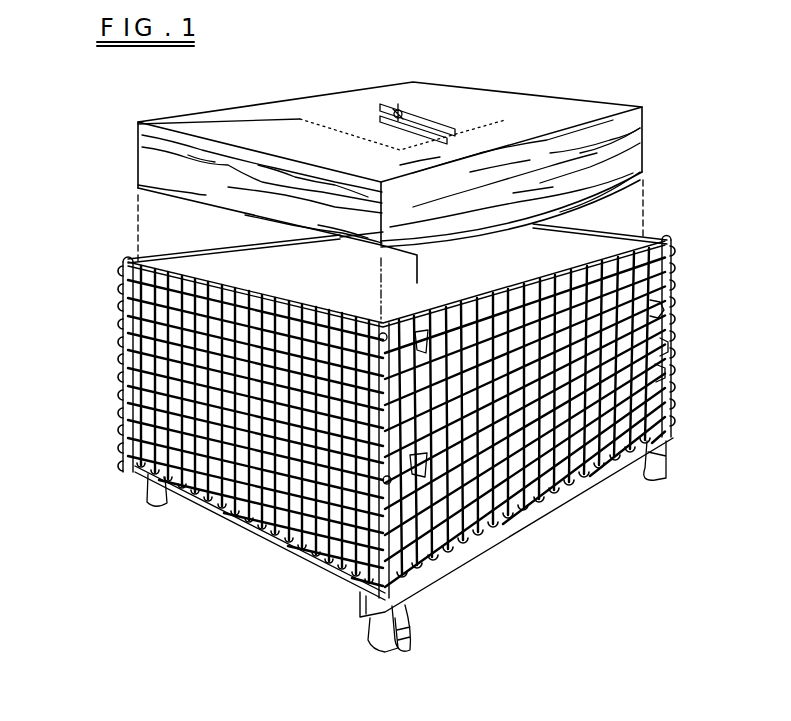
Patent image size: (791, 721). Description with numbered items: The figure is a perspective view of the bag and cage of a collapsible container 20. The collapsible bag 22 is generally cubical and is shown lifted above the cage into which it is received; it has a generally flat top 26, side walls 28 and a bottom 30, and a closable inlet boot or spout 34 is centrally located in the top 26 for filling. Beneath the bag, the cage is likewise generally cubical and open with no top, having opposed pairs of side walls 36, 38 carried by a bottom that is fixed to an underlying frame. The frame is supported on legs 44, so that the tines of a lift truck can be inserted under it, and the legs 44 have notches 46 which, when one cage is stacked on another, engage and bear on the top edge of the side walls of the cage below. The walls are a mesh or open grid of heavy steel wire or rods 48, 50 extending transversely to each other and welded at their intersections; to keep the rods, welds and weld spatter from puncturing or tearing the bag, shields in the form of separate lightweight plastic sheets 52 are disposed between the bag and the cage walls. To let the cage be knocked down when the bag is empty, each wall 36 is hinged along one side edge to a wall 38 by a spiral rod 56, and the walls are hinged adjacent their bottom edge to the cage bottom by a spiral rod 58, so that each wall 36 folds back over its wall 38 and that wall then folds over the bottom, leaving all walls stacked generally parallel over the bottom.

The collapsible container 20 is at (104, 230).
The collapsible bag 22 is at (153, 116).
The top 26 is at (300, 107).
The side walls 28 is at (160, 166).
The bottom 30 is at (448, 252).
The inlet boot or spout 34 is at (405, 117).
The side walls 36 is at (135, 332).
The side walls 38 is at (672, 266).
The legs 44 is at (147, 503).
The notches 46 is at (383, 647).
The rods 48 is at (665, 312).
The rods 50 is at (663, 372).
The sheets 52 is at (323, 281).
The spiral rod 56 is at (125, 403).
The spiral rod 58 is at (480, 556).